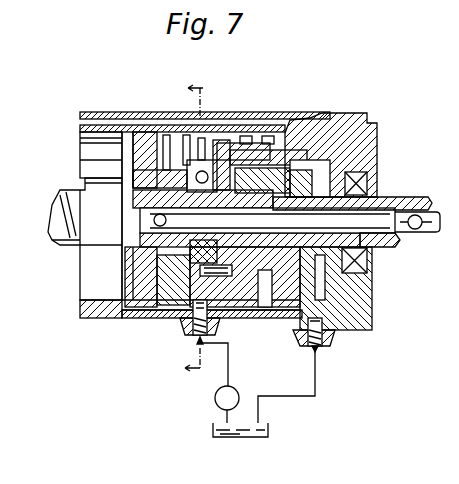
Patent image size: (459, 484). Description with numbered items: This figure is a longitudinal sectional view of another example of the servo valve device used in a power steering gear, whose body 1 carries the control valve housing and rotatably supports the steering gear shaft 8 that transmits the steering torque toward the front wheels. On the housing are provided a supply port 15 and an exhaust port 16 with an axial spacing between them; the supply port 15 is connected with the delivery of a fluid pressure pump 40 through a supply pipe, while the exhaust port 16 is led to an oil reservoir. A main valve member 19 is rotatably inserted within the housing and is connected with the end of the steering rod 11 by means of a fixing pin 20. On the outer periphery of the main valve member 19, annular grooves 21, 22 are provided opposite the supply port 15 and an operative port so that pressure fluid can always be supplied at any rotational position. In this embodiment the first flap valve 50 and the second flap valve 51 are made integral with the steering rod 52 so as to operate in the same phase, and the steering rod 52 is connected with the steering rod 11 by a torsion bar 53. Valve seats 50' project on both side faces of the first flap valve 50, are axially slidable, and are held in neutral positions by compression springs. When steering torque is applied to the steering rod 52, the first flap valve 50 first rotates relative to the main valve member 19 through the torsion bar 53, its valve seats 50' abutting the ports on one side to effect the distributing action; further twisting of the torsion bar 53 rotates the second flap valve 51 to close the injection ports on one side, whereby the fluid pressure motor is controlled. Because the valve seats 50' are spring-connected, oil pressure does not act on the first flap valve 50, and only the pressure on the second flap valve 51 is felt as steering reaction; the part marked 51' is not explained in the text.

The body 1 is at (105, 320).
The steering gear shaft 8 is at (197, 231).
The steering rod 11 is at (64, 188).
The supply port 15 is at (197, 341).
The exhaust port 16 is at (323, 337).
The main valve member 19 is at (262, 323).
The fixing pin 20 is at (243, 323).
The annular groove 21 is at (160, 320).
The annular groove 22 is at (280, 323).
The fluid pressure pump 40 is at (215, 400).
The first flap valve 50 is at (182, 123).
The valve seats 50' is at (214, 111).
The second flap valve 51 is at (331, 128).
The bearing 51' is at (266, 126).
The steering rod 52 is at (380, 196).
The torsion bar 53 is at (378, 247).